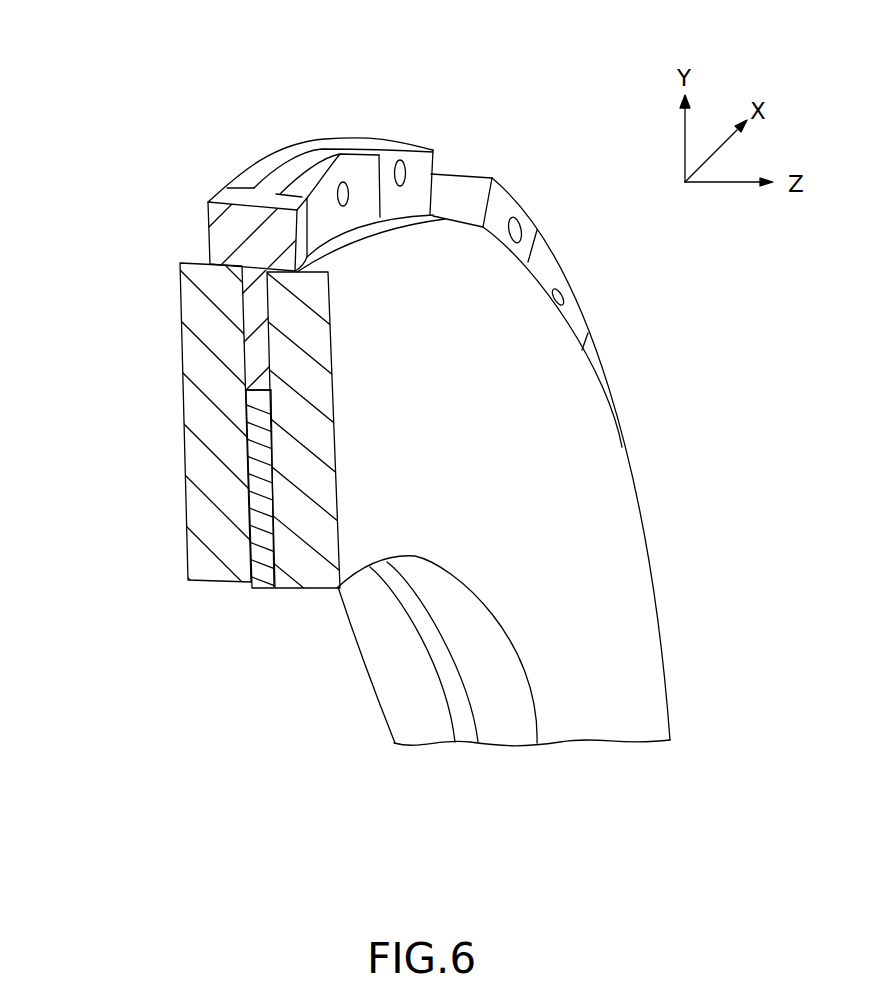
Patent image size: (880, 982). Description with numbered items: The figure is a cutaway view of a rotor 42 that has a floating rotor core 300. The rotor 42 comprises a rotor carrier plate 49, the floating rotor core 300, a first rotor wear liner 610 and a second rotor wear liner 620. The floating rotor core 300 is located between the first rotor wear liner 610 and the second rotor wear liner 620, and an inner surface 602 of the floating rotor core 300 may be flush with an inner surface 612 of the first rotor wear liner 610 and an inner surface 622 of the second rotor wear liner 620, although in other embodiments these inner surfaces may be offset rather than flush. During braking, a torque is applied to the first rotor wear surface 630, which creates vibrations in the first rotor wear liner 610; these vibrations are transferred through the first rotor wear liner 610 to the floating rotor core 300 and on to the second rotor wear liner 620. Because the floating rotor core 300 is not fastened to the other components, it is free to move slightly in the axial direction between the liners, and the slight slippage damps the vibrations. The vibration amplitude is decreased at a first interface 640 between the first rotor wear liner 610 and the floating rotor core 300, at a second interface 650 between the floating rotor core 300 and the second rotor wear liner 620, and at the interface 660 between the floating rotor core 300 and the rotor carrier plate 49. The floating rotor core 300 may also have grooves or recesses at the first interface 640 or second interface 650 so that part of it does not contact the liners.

The rotor 42 is at (564, 76).
The rotor carrier plate 49 is at (206, 218).
The floating rotor core 300 is at (189, 530).
The inner surface of floating rotor core 602 is at (465, 731).
The first rotor wear liner 610 is at (643, 552).
The inner surface of first rotor wear liner 612 is at (515, 733).
The second rotor wear liner 620 is at (180, 340).
The inner surface of second rotor wear liner 622 is at (423, 732).
The first rotor wear surface 630 is at (546, 694).
The first interface 640 is at (288, 553).
The second interface 650 is at (236, 542).
The interface 660 is at (247, 405).